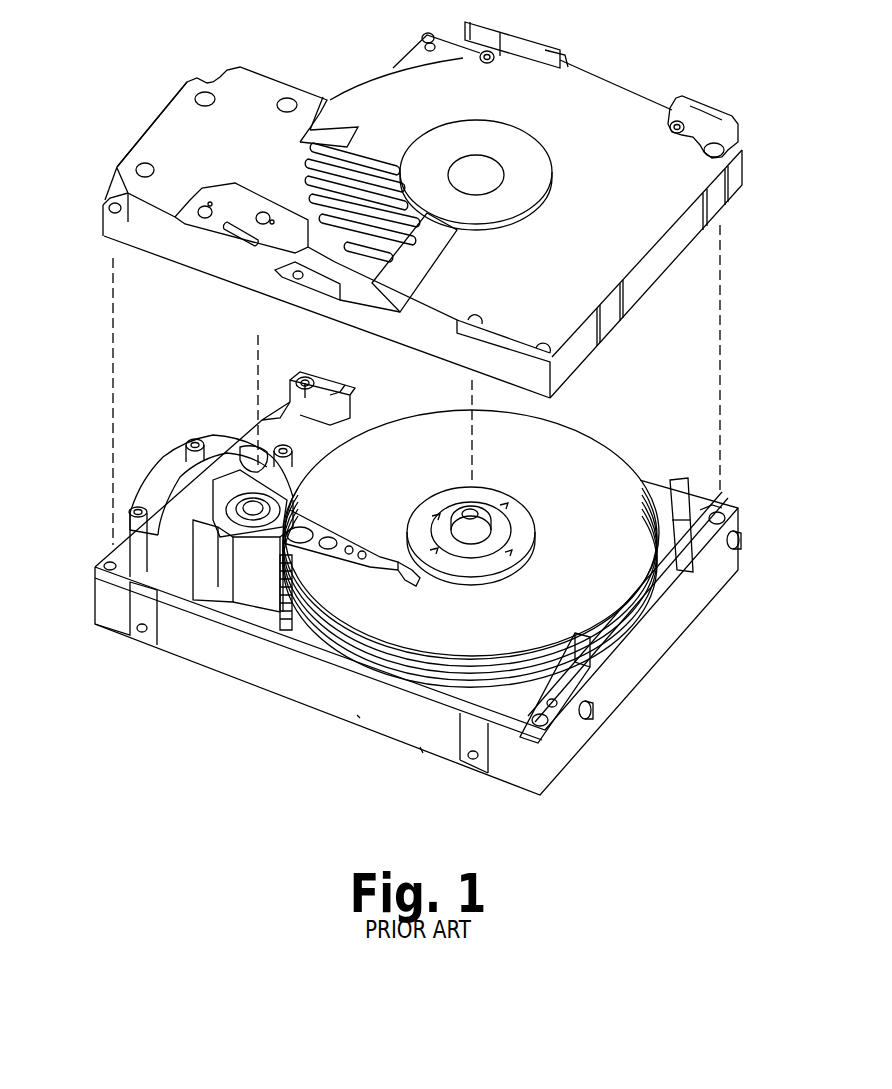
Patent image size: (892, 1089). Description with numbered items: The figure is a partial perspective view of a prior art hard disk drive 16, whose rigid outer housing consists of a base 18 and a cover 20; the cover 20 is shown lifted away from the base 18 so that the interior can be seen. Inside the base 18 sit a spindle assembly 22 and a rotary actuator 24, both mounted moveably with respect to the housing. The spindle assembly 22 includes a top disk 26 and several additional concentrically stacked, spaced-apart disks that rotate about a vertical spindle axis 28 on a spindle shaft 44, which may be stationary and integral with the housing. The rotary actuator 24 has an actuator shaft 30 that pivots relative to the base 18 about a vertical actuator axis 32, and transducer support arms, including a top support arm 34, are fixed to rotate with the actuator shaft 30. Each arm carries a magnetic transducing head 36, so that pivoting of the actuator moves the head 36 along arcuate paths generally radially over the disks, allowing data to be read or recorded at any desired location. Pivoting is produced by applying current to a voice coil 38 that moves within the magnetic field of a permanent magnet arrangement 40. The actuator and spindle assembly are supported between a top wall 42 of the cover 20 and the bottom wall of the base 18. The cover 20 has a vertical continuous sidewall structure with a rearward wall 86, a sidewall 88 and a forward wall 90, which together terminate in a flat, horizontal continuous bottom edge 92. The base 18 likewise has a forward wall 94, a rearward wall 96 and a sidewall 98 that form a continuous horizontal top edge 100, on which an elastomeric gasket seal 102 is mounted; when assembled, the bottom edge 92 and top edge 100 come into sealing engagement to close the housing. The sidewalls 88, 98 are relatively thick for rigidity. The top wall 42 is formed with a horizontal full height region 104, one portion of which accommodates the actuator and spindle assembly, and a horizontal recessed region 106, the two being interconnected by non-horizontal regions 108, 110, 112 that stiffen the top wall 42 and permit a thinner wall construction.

The hard disk drive 16 is at (150, 100).
The base 18 is at (678, 618).
The cover 20 is at (593, 93).
The spindle assembly 22 is at (626, 454).
The rotary actuator 24 is at (254, 597).
The top disk 26 is at (568, 452).
The spindle axis 28 is at (469, 460).
The actuator shaft 30 is at (290, 507).
The actuator axis 32 is at (256, 367).
The top support arm 34 is at (352, 572).
The transducing head 36 is at (421, 588).
The voice coil 38 is at (150, 492).
The permanent magnet arrangement 40 is at (236, 458).
The top wall 42 is at (382, 92).
The spindle shaft 44 is at (480, 523).
The rearward wall 86 is at (648, 278).
The sidewall 88 is at (180, 250).
The forward wall 90 is at (133, 150).
The bottom edge 92 is at (362, 330).
The forward wall 94 is at (108, 558).
The rearward wall 96 is at (615, 701).
The sidewall 98 is at (320, 694).
The top edge 100 is at (720, 496).
The elastomeric gasket seal 102 is at (642, 592).
The full height region 104 is at (240, 90).
The recessed region 106 is at (700, 177).
The non-horizontal region 108 is at (520, 230).
The non-horizontal region 110 is at (425, 265).
The non-horizontal region 112 is at (333, 130).